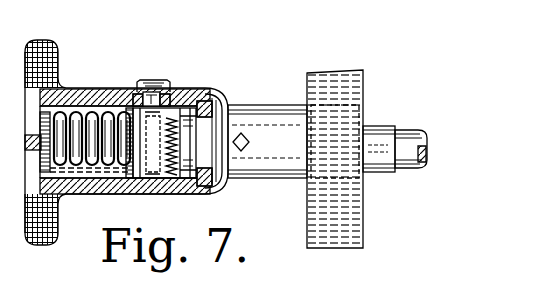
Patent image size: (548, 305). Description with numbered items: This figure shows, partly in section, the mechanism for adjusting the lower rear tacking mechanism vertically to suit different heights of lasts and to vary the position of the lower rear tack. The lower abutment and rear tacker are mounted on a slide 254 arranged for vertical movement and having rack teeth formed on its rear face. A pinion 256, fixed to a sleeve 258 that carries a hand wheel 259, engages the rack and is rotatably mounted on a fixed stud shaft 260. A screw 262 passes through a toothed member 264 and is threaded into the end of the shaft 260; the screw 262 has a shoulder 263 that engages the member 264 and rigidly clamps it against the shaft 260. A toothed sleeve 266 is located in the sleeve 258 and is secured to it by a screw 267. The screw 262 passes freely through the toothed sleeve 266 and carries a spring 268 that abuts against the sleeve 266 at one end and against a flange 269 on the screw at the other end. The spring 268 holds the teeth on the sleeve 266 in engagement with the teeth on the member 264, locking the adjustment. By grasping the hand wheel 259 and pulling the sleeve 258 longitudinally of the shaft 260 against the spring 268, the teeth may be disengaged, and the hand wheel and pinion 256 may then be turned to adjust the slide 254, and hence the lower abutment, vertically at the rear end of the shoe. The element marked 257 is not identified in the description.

The slide 254 is at (347, 238).
The pinion 256 is at (367, 122).
The pin 257 is at (20, 119).
The sleeve 258 is at (205, 98).
The hand wheel 259 is at (50, 55).
The stud shaft 260 is at (378, 157).
The screw 262 is at (91, 163).
The shoulder 263 is at (233, 106).
The toothed member 264 is at (210, 183).
The toothed sleeve 266 is at (143, 133).
The screw 267 is at (176, 86).
The spring 268 is at (117, 160).
The flange 269 is at (42, 155).